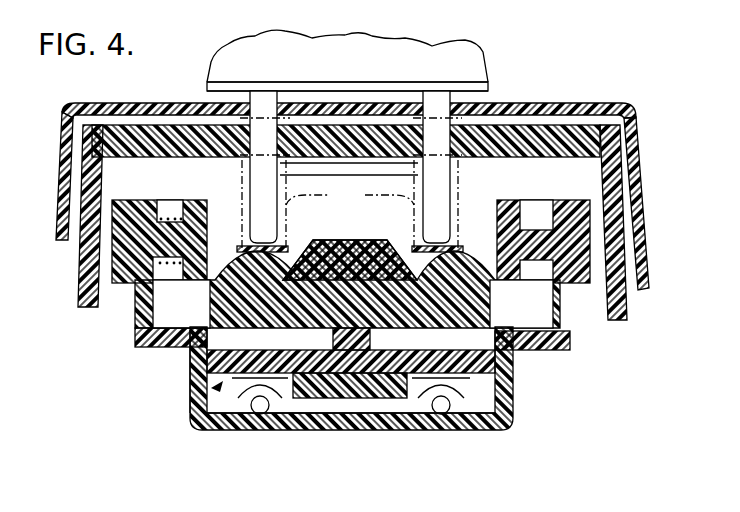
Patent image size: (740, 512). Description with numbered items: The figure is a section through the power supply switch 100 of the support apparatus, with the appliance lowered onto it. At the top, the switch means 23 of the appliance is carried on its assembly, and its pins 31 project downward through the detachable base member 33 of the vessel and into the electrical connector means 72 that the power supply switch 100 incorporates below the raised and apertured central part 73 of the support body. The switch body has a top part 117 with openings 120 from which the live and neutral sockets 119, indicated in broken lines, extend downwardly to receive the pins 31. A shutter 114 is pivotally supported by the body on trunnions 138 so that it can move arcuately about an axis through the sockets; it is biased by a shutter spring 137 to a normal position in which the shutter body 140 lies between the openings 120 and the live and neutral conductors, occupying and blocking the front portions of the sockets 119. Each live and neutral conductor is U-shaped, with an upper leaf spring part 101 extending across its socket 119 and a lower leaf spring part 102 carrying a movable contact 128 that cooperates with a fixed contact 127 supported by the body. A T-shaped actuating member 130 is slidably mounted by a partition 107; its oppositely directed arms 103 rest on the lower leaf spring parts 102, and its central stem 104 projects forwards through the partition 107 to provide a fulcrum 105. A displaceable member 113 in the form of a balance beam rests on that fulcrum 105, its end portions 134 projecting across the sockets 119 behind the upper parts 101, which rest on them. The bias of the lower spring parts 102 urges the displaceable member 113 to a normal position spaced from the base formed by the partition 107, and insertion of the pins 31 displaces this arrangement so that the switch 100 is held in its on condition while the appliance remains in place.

The switch means 23 is at (341, 58).
The displaceable member 113 is at (437, 117).
The top part 117 is at (333, 130).
The pin 31 is at (258, 115).
The opening 120 is at (198, 105).
The detachable base member 33 is at (568, 103).
The raised and apertured central part 73 is at (601, 132).
The shutter 114 is at (636, 140).
The shutter body 140 is at (200, 165).
The shutter spring 137 is at (168, 200).
The live and neutral sockets 119 is at (351, 184).
The electrical connector means 72 is at (322, 231).
The fulcrum 105 is at (385, 262).
The upper leaf spring part 101 is at (225, 270).
The arm portions 134 is at (138, 336).
The partition 107 is at (190, 352).
The arms 103 is at (228, 362).
The power supply switch 100 is at (192, 397).
The lower leaf spring part 102 is at (207, 432).
The fixed contact 127 is at (262, 408).
The movable contact 128 is at (275, 386).
The actuating member 130 is at (351, 385).
The central stem 104 is at (380, 355).
The trunnions 138 is at (588, 300).